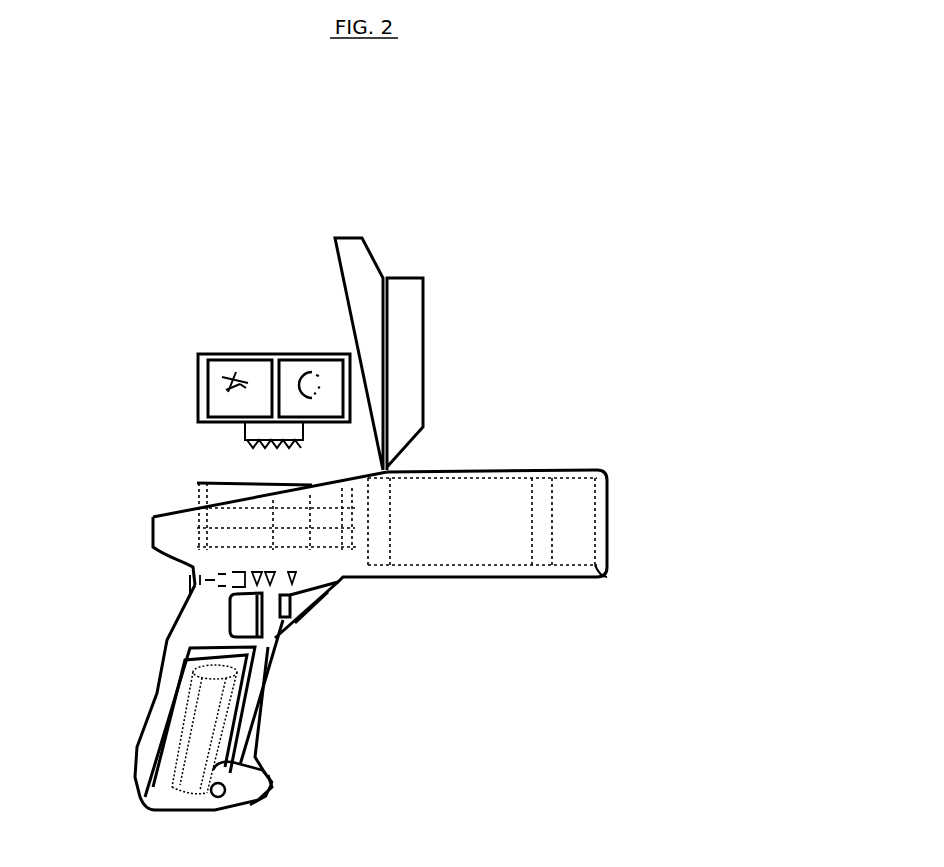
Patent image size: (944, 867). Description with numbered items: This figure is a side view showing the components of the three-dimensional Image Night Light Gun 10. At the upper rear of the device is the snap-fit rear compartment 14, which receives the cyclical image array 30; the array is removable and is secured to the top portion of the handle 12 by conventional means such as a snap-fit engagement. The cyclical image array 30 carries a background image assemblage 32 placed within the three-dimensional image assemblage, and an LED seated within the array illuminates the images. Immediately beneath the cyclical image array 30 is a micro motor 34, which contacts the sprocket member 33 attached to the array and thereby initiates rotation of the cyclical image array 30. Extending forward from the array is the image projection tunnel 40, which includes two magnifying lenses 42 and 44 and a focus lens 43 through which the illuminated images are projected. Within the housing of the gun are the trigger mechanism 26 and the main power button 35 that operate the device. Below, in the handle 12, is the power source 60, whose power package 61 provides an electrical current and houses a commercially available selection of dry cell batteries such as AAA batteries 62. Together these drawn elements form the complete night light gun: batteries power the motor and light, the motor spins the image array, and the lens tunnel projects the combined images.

The 3-D Image Night Light Gun 10 is at (667, 427).
The handle 12 is at (167, 640).
The snap-fit rear compartment 14 is at (350, 238).
The trigger mechanism 26 is at (318, 620).
The cyclical image array 30 is at (197, 360).
The background image assemblage 32 is at (313, 483).
The sprocket member 33 is at (245, 432).
The micro motor 34 is at (190, 590).
The main power button 35 is at (243, 622).
The image projection tunnel 40 is at (493, 470).
The magnifying lens 42 is at (382, 557).
The focus lens 43 is at (543, 557).
The magnifying lens 44 is at (598, 550).
The power source 60 is at (247, 703).
The power package 61 is at (268, 783).
The AAA batteries 62 is at (155, 790).